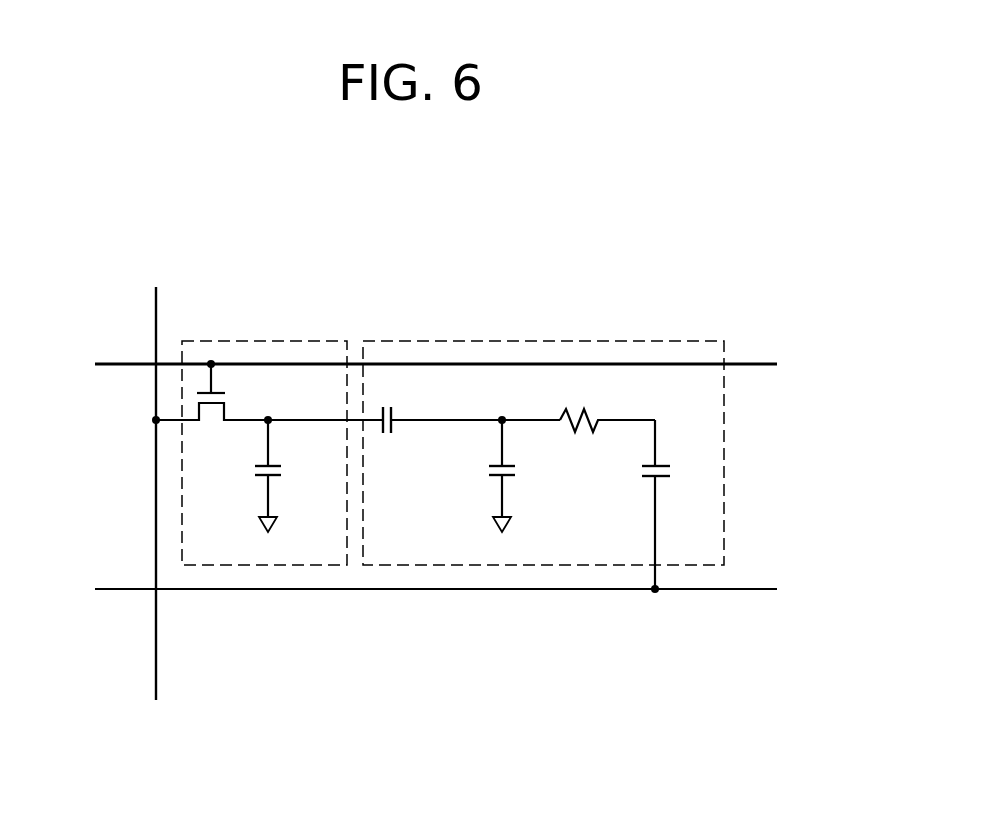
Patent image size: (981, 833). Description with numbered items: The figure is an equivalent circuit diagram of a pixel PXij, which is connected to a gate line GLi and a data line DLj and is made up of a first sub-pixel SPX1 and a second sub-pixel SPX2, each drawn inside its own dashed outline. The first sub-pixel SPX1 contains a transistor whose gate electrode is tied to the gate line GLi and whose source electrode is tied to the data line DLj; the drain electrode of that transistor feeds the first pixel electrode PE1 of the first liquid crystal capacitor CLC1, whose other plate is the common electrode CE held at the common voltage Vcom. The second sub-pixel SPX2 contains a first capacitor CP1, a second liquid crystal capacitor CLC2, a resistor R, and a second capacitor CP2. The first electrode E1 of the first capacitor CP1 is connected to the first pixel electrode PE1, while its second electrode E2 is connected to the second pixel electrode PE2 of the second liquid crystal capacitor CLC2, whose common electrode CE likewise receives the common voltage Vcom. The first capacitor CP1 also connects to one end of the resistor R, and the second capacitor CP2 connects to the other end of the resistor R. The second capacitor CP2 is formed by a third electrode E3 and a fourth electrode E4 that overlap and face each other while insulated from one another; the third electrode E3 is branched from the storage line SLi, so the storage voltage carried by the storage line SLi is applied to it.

The pixel PXij is at (568, 247).
The data line DLj is at (154, 480).
The gate line GLi is at (415, 365).
The storage line SLi is at (415, 590).
The first sub-pixel SPX1 is at (274, 339).
The second sub-pixel SPX2 is at (616, 339).
The first electrode E1 is at (382, 407).
The second electrode E2 is at (392, 407).
The third electrode E3 is at (659, 479).
The fourth electrode E4 is at (659, 463).
The first capacitor CP1 is at (387, 435).
The second capacitor CP2 is at (677, 472).
The first liquid crystal capacitor CLC1 is at (296, 468).
The second liquid crystal capacitor CLC2 is at (530, 468).
The first pixel electrode PE1 is at (262, 458).
The second pixel electrode PE2 is at (496, 460).
The common electrode CE is at (262, 482).
The resistor R is at (607, 406).
The common voltage Vcom is at (386, 538).